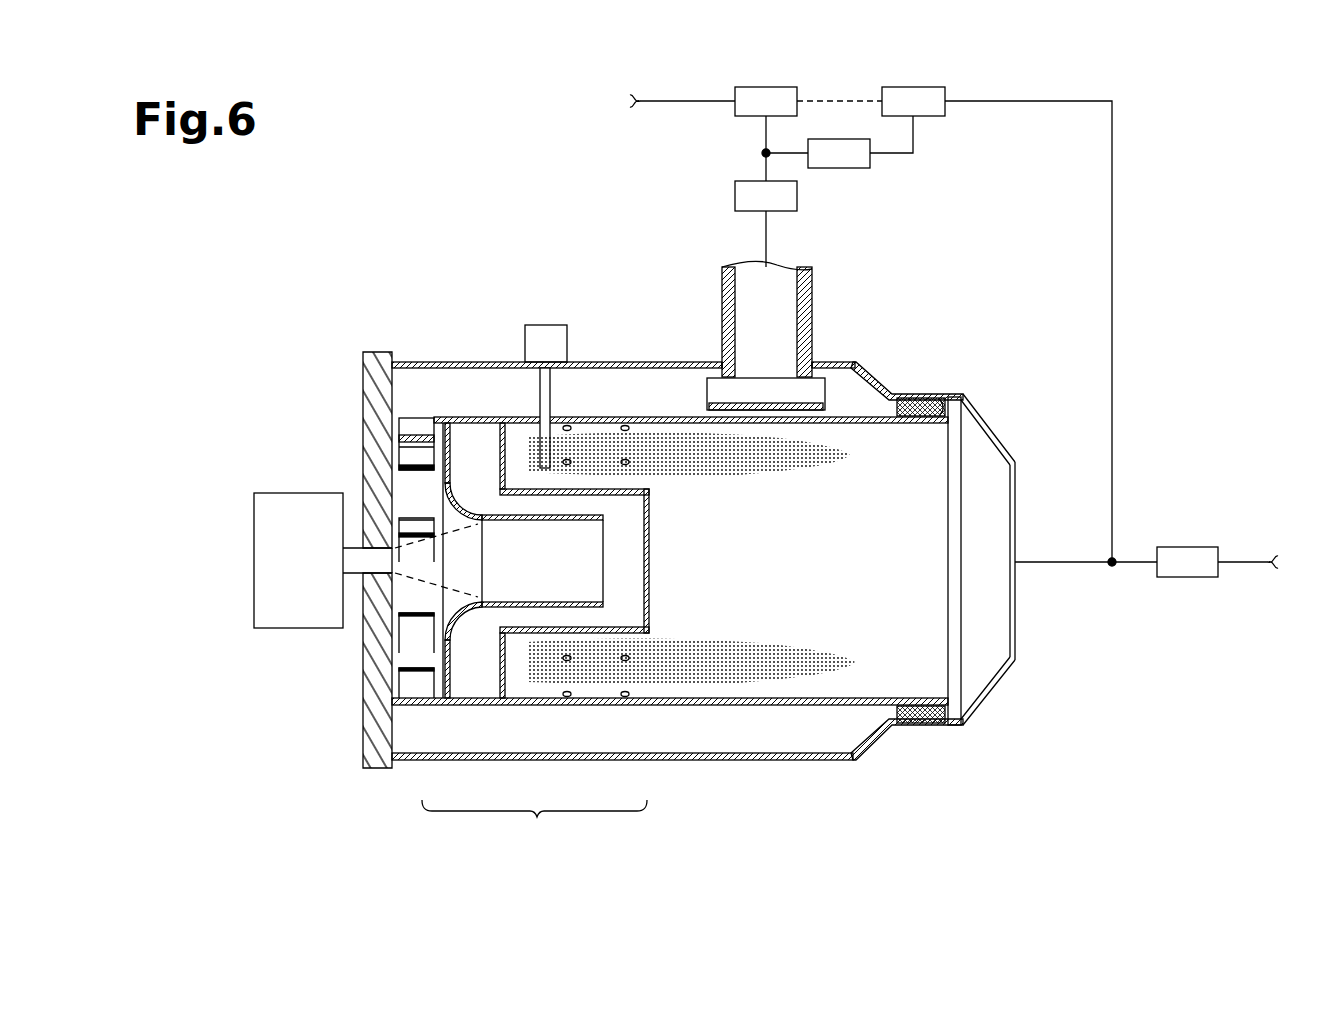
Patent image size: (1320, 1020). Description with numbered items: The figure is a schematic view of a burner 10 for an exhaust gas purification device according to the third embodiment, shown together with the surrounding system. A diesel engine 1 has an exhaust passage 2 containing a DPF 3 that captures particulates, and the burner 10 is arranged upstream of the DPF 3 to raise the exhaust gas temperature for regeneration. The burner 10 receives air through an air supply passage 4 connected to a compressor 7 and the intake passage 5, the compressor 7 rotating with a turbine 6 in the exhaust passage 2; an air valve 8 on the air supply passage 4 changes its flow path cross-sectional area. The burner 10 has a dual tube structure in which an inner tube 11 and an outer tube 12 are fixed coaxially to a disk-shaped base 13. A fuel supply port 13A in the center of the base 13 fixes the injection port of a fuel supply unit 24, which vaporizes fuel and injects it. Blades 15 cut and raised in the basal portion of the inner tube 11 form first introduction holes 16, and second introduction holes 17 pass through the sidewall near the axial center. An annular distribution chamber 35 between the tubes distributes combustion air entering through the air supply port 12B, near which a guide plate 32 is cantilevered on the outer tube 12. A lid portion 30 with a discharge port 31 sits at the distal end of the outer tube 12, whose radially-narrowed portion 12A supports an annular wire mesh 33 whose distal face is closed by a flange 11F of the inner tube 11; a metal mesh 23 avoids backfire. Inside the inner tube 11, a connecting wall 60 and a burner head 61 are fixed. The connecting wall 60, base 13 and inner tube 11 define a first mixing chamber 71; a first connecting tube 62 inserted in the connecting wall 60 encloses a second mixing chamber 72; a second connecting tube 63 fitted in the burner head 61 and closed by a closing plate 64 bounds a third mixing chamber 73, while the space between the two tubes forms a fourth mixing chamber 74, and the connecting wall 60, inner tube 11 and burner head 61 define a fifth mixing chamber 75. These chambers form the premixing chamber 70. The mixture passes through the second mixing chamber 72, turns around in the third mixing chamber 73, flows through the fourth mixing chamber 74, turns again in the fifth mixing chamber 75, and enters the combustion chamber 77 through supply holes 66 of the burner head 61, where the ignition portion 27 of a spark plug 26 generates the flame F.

The diesel engine 1 is at (839, 142).
The exhaust passage 2 is at (1112, 210).
The DPF 3 is at (1190, 547).
The air supply passage 4 is at (812, 300).
The intake passage 5 is at (766, 140).
The turbine 6 is at (871, 101).
The compressor 7 is at (713, 101).
The air valve 8 is at (766, 224).
The burner 10 is at (263, 277).
The inner tube 11 is at (405, 428).
The flange 11F is at (958, 397).
The outer tube 12 is at (590, 363).
The radially-narrowed portion 12A is at (905, 398).
The air supply port 12B is at (722, 350).
The base 13 is at (366, 380).
The fuel supply port 13A is at (372, 560).
The blades 15 is at (399, 540).
The first introduction holes 16 is at (406, 528).
The second introduction holes 17 is at (595, 417).
The metal mesh 23 is at (508, 435).
The fuel supply unit 24 is at (274, 493).
The spark plug 26 is at (545, 325).
The ignition portion 27 is at (548, 460).
The lid portion 30 is at (984, 427).
The discharge port 31 is at (1016, 465).
The guide plate 32 is at (707, 402).
The wire mesh 33 is at (919, 418).
The distribution chamber 35 is at (803, 742).
The connecting wall 60 is at (443, 470).
The burner head 61 is at (502, 423).
The first connecting tube 62 is at (558, 520).
The second connecting tube 63 is at (632, 495).
The closing plate 64 is at (649, 565).
The supply holes 66 is at (500, 450).
The premixing chamber 70 is at (534, 825).
The first mixing chamber 71 is at (441, 690).
The second mixing chamber 72 is at (515, 592).
The third mixing chamber 73 is at (627, 618).
The fourth mixing chamber 74 is at (548, 620).
The fifth mixing chamber 75 is at (484, 690).
The combustion chamber 77 is at (690, 690).
The flame F is at (752, 468).